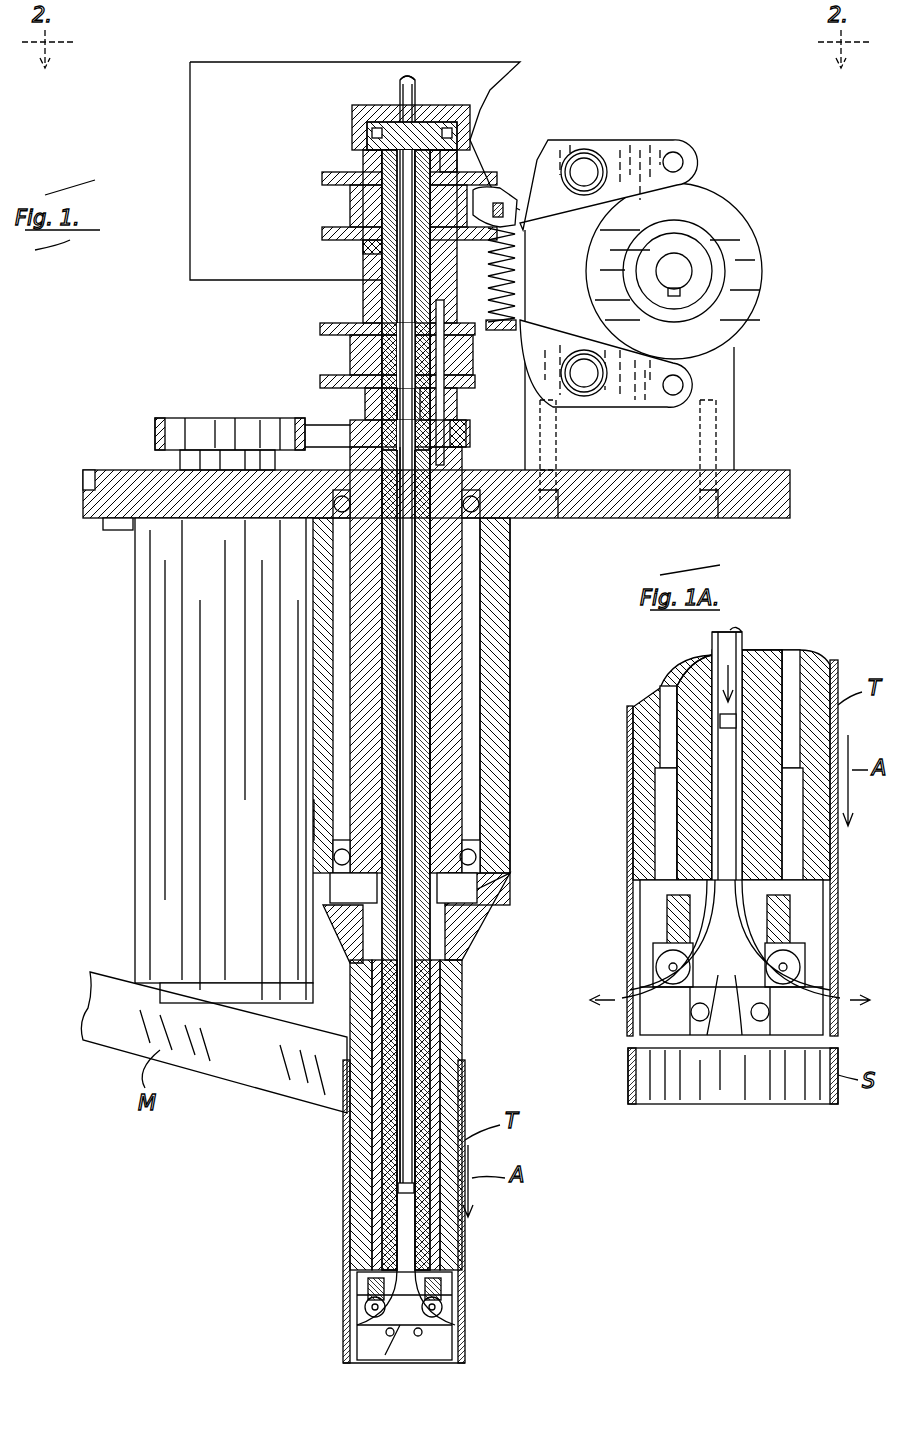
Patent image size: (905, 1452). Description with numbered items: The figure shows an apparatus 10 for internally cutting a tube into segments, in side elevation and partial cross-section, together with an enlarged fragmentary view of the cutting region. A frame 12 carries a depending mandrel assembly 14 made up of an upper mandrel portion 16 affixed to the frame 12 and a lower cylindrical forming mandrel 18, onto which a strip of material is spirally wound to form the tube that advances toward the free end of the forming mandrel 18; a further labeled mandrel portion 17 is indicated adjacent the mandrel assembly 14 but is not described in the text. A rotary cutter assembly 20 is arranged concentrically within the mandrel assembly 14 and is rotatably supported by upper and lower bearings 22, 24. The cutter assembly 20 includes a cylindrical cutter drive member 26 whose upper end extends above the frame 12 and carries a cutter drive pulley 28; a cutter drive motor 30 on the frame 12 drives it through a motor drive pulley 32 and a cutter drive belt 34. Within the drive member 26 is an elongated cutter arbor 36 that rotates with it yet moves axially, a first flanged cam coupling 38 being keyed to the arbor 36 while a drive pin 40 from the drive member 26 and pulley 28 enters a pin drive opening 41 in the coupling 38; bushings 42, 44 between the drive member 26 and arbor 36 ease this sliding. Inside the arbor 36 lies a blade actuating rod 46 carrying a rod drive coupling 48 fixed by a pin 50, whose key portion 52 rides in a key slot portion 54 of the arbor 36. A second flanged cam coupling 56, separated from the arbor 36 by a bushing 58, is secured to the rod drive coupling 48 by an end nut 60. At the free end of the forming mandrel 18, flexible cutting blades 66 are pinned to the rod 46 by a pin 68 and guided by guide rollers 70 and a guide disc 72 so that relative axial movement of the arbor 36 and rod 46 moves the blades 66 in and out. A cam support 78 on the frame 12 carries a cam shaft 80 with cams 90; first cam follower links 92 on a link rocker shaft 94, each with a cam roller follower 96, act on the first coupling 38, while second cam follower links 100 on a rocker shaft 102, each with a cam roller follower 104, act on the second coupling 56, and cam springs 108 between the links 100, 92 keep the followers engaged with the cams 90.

In FIG. 1, the apparatus 10 is at (622, 70).
In FIG. 1, the frame 12 is at (790, 497).
In FIG. 1, the mandrel assembly 14 is at (514, 761).
In FIG. 1, the upper mandrel portion 16 is at (510, 715).
In FIG. 1, the housing bore 17 is at (510, 760).
In FIG. 1, the forming mandrel 18 is at (462, 998).
In FIG. 1A, the forming mandrel 18 is at (640, 845).
In FIG. 1, the rotary cutter assembly 20 is at (480, 624).
In FIG. 1, the upper bearing 22 is at (342, 505).
In FIG. 1, the lower bearing 24 is at (335, 840).
In FIG. 1, the cutter drive member 26 is at (440, 645).
In FIG. 1, the cutter drive pulley 28 is at (462, 437).
In FIG. 1, the cutter drive motor 30 is at (225, 648).
In FIG. 1, the motor drive pulley 32 is at (172, 420).
In FIG. 1, the cutter drive belt 34 is at (330, 425).
In FIG. 1, the cutter arbor 36 is at (390, 268).
In FIG. 1A, the cutter arbor 36 is at (685, 695).
In FIG. 1, the first flanged cam coupling 38 is at (320, 326).
In FIG. 1, the drive pin 40 is at (458, 422).
In FIG. 1, the pin drive opening 41 is at (440, 300).
In FIG. 1, the bushing 42 is at (475, 505).
In FIG. 1, the bushing 44 is at (440, 880).
In FIG. 1, the blade actuating rod 46 is at (405, 685).
In FIG. 1A, the blade actuating rod 46 is at (735, 650).
In FIG. 1, the rod drive coupling 48 is at (436, 122).
In FIG. 1, the pin 50 is at (408, 122).
In FIG. 1, the key portion 52 is at (457, 150).
In FIG. 1, the key slot portion 54 is at (470, 186).
In FIG. 1, the second flanged cam coupling 56 is at (322, 178).
In FIG. 1, the bushing 58 is at (375, 240).
In FIG. 1, the end nut 60 is at (352, 125).
In FIG. 1, the flexible cutting blades 66 is at (398, 1340).
In FIG. 1A, the flexible cutting blades 66 is at (718, 1040).
In FIG. 1, the pin 68 is at (398, 1188).
In FIG. 1A, the pin 68 is at (737, 722).
In FIG. 1, the guide rollers 70 is at (366, 1308).
In FIG. 1A, the guide rollers 70 is at (660, 968).
In FIG. 1, the guide disc 72 is at (415, 1345).
In FIG. 1, the cam support 78 is at (736, 365).
In FIG. 1, the cam shaft 80 is at (676, 276).
In FIG. 1, the cams 90 is at (725, 222).
In FIG. 1, the first cam follower links 92 is at (632, 395).
In FIG. 1, the link rocker shaft 94 is at (592, 380).
In FIG. 1, the cam roller follower 96 is at (695, 385).
In FIG. 1, the second cam follower links 100 is at (610, 142).
In FIG. 1, the rocker shaft 102 is at (590, 160).
In FIG. 1, the cam roller follower 104 is at (696, 160).
In FIG. 1, the cam springs 108 is at (505, 288).